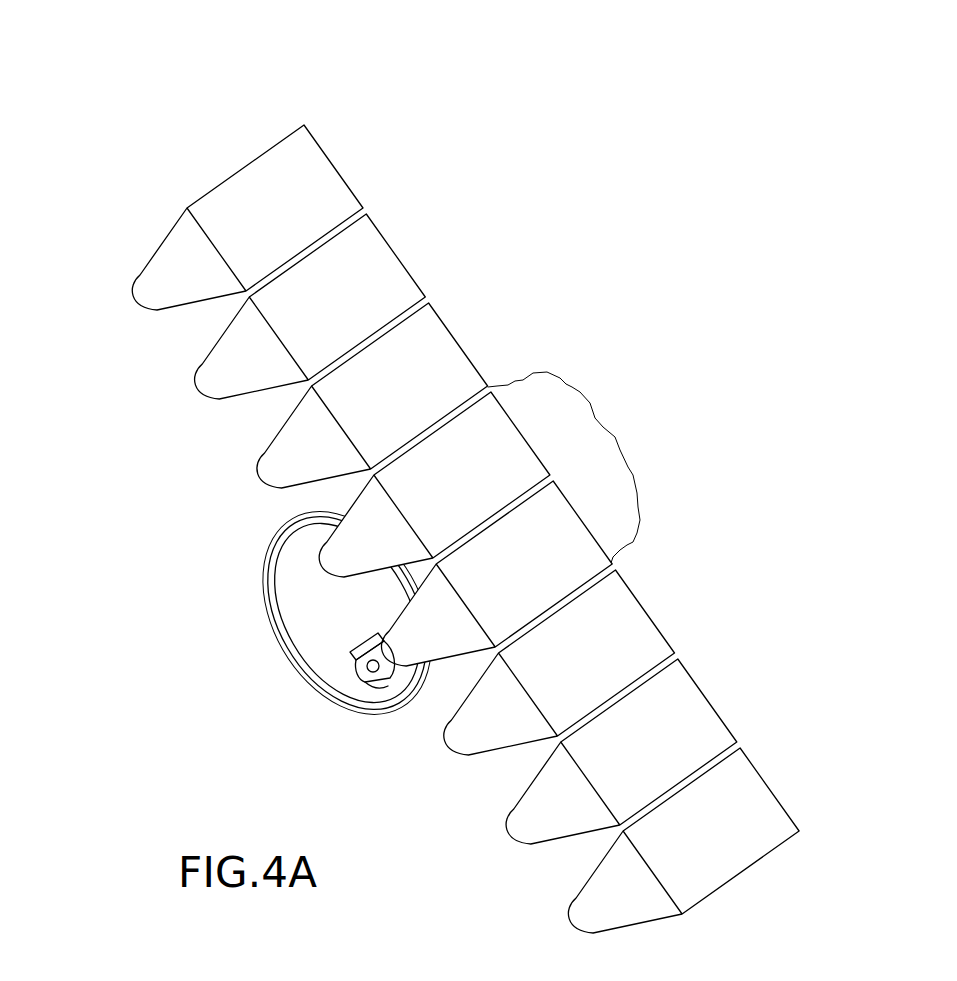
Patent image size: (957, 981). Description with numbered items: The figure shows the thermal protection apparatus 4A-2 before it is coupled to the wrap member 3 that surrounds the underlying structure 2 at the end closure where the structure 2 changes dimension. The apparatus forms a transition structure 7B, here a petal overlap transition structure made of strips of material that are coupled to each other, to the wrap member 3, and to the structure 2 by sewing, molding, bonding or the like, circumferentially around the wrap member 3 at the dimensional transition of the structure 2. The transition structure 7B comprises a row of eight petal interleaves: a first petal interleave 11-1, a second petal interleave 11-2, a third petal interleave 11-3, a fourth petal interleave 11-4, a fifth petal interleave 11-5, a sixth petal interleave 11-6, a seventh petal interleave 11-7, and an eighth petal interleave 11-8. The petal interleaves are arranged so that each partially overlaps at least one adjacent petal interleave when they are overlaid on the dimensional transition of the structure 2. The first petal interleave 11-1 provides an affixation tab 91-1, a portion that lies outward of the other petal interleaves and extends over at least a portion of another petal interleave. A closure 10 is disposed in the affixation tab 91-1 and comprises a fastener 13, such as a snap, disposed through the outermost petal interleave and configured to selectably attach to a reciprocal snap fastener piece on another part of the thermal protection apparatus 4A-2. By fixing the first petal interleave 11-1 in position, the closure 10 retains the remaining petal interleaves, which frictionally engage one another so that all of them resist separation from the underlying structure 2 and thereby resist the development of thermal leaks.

The structure 2 is at (305, 620).
The wrap member 3 is at (300, 515).
The closure 10 is at (362, 642).
The fastener 13 is at (367, 667).
The affixation tab 91-1 is at (370, 675).
The first petal interleave 11-1 is at (443, 607).
The second petal interleave 11-2 is at (333, 559).
The third petal interleave 11-3 is at (270, 474).
The fourth petal interleave 11-4 is at (213, 382).
The fifth petal interleave 11-5 is at (150, 297).
The sixth petal interleave 11-6 is at (580, 910).
The seventh petal interleave 11-7 is at (527, 828).
The eighth petal interleave 11-8 is at (455, 741).
The transition structure 7B is at (440, 240).
The thermal protection apparatus 4A-2 is at (806, 765).